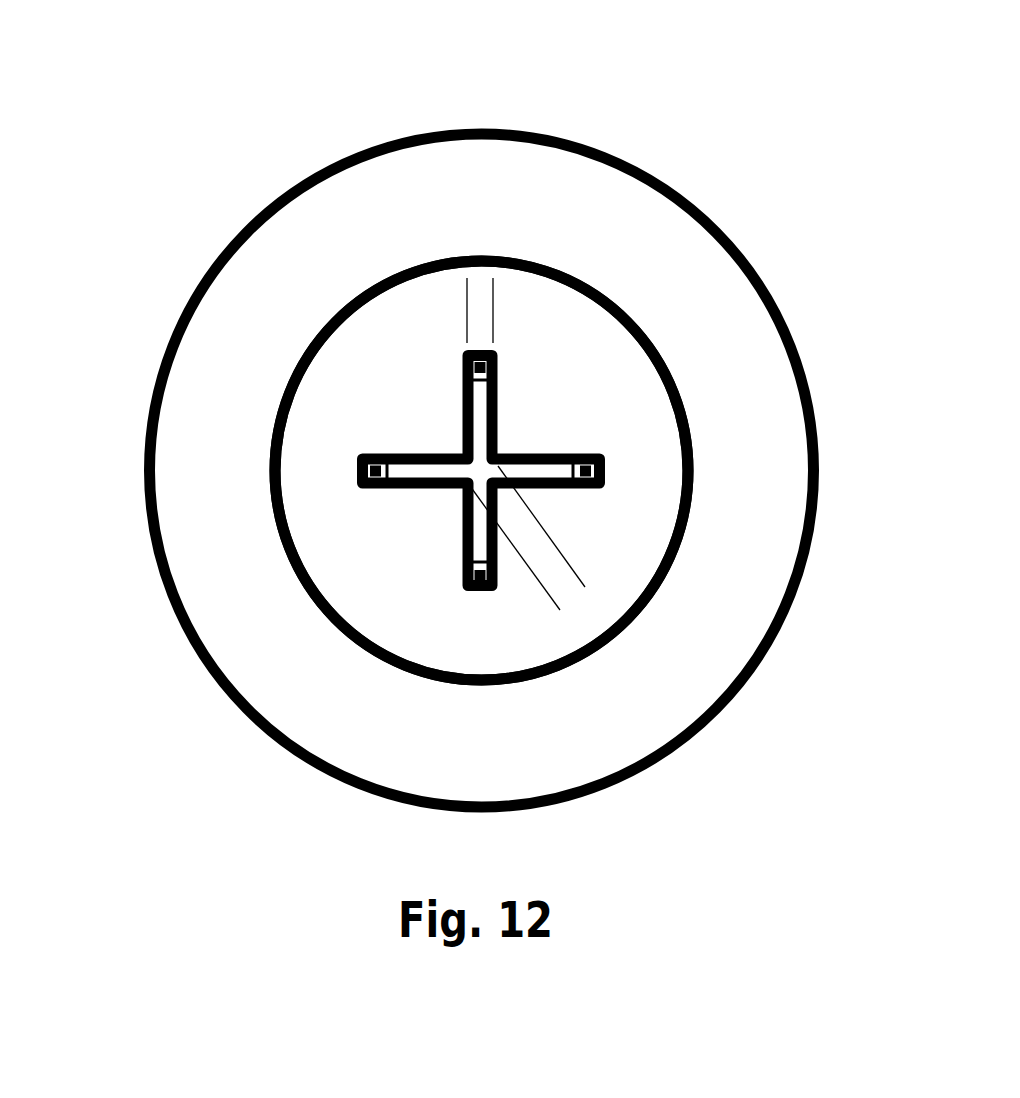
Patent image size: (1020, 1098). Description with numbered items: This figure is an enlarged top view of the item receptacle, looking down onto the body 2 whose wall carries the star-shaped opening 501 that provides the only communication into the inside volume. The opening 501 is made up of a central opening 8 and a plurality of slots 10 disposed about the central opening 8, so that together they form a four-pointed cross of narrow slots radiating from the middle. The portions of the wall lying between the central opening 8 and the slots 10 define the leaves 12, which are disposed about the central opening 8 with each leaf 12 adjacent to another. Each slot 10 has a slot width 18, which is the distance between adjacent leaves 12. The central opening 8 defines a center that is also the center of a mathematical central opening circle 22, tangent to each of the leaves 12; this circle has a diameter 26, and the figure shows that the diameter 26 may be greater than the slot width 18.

The body 2 is at (427, 263).
The leaves 12 is at (420, 409).
The slots 10 is at (478, 538).
The central opening circle 22 is at (500, 455).
The opening 501 is at (497, 385).
The central opening 8 is at (472, 465).
The slot width 18 is at (555, 313).
The diameter 26 is at (623, 515).